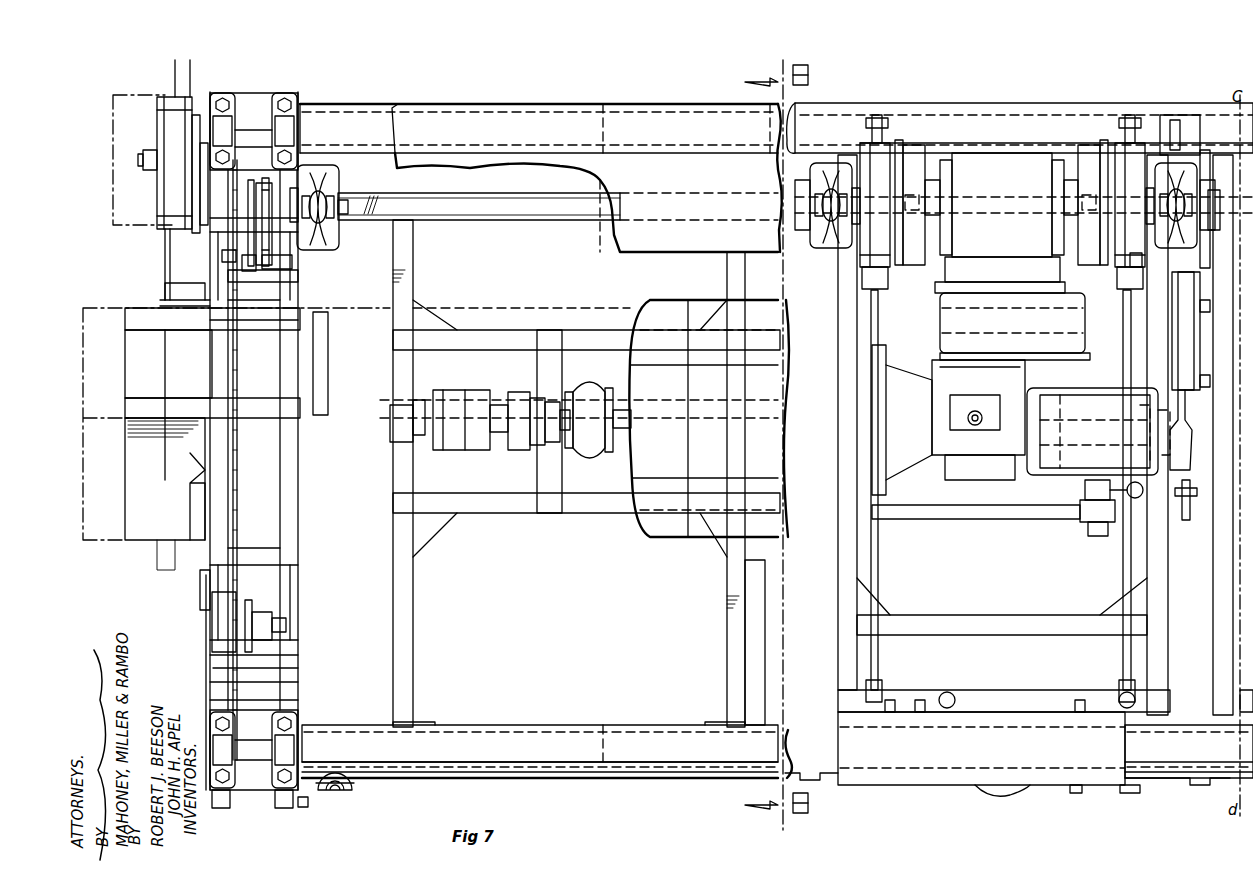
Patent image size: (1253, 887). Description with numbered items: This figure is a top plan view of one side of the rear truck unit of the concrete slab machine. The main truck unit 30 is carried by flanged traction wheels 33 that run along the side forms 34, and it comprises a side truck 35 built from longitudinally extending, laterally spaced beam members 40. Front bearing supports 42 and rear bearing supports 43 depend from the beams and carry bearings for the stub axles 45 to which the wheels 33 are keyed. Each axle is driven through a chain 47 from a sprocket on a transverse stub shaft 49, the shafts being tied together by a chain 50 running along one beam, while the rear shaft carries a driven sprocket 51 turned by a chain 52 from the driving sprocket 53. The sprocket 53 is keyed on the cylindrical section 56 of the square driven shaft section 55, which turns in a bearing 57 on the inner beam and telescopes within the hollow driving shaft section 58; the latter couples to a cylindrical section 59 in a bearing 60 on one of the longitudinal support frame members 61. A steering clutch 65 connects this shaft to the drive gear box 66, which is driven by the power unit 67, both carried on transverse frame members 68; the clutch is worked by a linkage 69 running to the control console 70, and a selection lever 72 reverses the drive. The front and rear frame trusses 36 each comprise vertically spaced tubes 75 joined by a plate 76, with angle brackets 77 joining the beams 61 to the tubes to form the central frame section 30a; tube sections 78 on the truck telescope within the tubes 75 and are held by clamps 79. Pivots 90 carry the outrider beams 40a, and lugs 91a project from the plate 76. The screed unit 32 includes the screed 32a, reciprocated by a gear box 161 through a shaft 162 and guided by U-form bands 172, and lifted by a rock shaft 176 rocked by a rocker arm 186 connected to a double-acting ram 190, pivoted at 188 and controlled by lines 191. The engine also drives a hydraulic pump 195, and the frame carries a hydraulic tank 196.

The main truck unit 30 is at (868, 810).
The central frame section 30a is at (702, 602).
The screed unit 32 is at (103, 508).
The screed 32a is at (127, 364).
The traction wheels 33 is at (157, 205).
The side forms 34 is at (172, 568).
The side trucks 35 is at (312, 680).
The frame trusses 36 is at (343, 97).
The beam members 40 is at (222, 690).
The outrider beams 40a is at (242, 815).
The front bearing supports 42 is at (212, 640).
The rear bearing supports 43 is at (248, 244).
The stub axles 45 is at (150, 153).
The chain 47 is at (262, 230).
The transverse stub shaft 49 is at (222, 266).
The chain 50 is at (238, 508).
The driven sprocket 51 is at (256, 270).
The chain 52 is at (280, 290).
The driving sprocket 53 is at (272, 240).
The driven shaft section 55 is at (360, 218).
The cylindrical section 56 is at (315, 225).
The bearing 57 is at (320, 197).
The hollow driving shaft section 58 is at (465, 192).
The cylindrical section 59 is at (915, 180).
The bearing 60 is at (840, 190).
The support frame members 61 is at (413, 632).
The steering clutch 65 is at (885, 125).
The drive gear box 66 is at (1018, 168).
The power unit 67 is at (678, 536).
The transverse frame members 68 is at (564, 330).
The linkage 69 is at (880, 580).
The control console 70 is at (1100, 792).
The selection lever 72 is at (976, 414).
The tubes 75 is at (538, 725).
The plate 76 is at (655, 778).
The angle brackets 77 is at (413, 710).
The tube sections 78 is at (270, 112).
The clamps 79 is at (217, 116).
The pivots 90 is at (308, 806).
The lugs 91a is at (785, 775).
The gear box 161 is at (1085, 480).
The shaft 162 is at (982, 518).
The U-form bands 172 is at (165, 286).
The rock shaft 176 is at (1073, 433).
The rocker arm 186 is at (1178, 458).
The ram pivot 188 is at (1130, 265).
The ram 190 is at (1172, 338).
The lines 191 is at (1200, 305).
The hydraulic pump 195 is at (462, 449).
The tank 196 is at (686, 255).